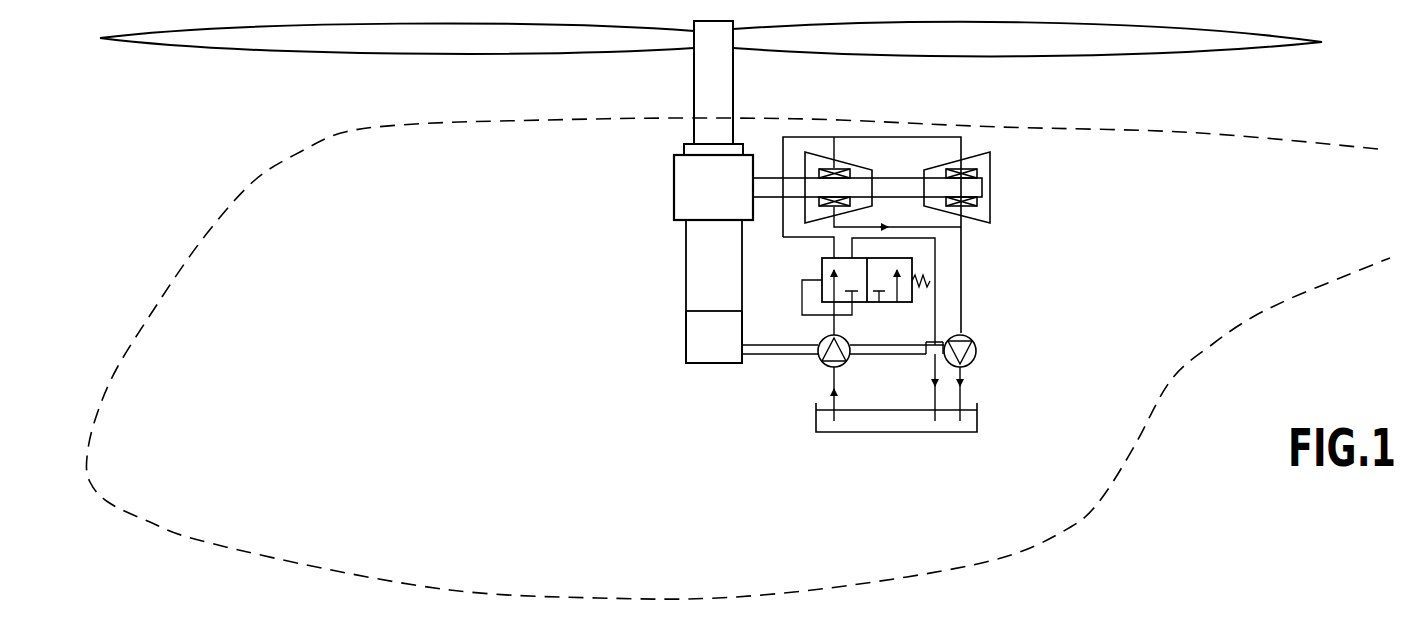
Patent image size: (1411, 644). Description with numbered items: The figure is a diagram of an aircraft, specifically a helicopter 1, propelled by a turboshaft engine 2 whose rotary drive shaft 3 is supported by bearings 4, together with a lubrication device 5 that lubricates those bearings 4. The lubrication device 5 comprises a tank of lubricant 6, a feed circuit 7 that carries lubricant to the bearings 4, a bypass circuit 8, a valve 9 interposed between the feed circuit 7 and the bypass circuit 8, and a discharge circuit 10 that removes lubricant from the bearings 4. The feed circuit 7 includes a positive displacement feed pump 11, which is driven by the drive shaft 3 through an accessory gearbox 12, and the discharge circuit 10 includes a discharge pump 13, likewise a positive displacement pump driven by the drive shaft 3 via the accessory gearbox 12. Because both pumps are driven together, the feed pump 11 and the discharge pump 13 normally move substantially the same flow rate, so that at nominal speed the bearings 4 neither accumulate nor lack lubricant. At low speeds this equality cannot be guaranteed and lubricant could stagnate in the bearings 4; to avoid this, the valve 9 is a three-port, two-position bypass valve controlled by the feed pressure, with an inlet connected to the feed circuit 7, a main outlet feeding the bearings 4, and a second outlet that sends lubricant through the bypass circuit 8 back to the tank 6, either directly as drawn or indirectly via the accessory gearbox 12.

The helicopter 1 is at (206, 230).
The turboshaft engine 2 is at (1006, 150).
The drive shaft 3 is at (968, 188).
The bearings 4 is at (833, 156).
The lubrication device 5 is at (803, 409).
The tank of lubricant 6 is at (882, 424).
The feed circuit 7 is at (838, 373).
The bypass circuit 8 is at (934, 371).
The valve 9 is at (805, 270).
The discharge circuit 10 is at (964, 374).
The feed pump 11 is at (823, 367).
The accessory gearbox 12 is at (695, 340).
The discharge pump 13 is at (972, 334).